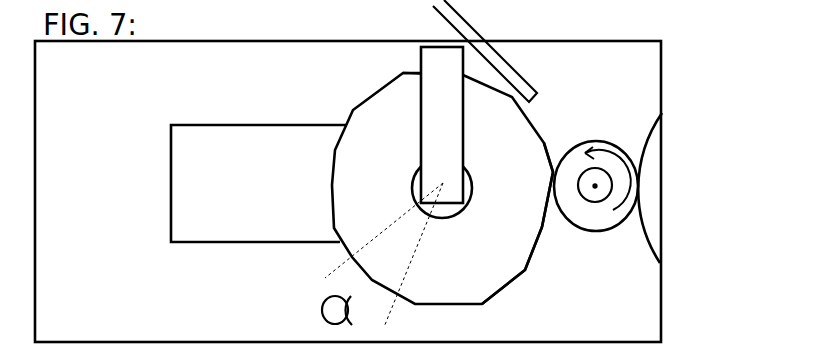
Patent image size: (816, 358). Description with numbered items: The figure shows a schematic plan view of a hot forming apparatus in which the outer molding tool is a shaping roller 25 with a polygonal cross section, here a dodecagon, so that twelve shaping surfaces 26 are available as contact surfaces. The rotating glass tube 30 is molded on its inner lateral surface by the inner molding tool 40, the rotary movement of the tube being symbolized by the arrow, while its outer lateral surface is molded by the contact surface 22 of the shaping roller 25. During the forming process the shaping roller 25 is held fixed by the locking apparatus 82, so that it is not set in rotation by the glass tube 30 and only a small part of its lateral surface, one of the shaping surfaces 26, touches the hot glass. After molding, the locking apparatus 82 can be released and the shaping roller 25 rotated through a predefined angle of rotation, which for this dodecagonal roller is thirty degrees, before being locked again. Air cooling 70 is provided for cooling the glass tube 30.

The contact surface 22 is at (553, 172).
The shaping roller 25 is at (442, 188).
The shaping surfaces 26 is at (493, 290).
The glass tube 30 is at (602, 142).
The inner molding tool 40 is at (596, 192).
The air cooling 70 is at (492, 55).
The locking apparatus 82 is at (442, 132).